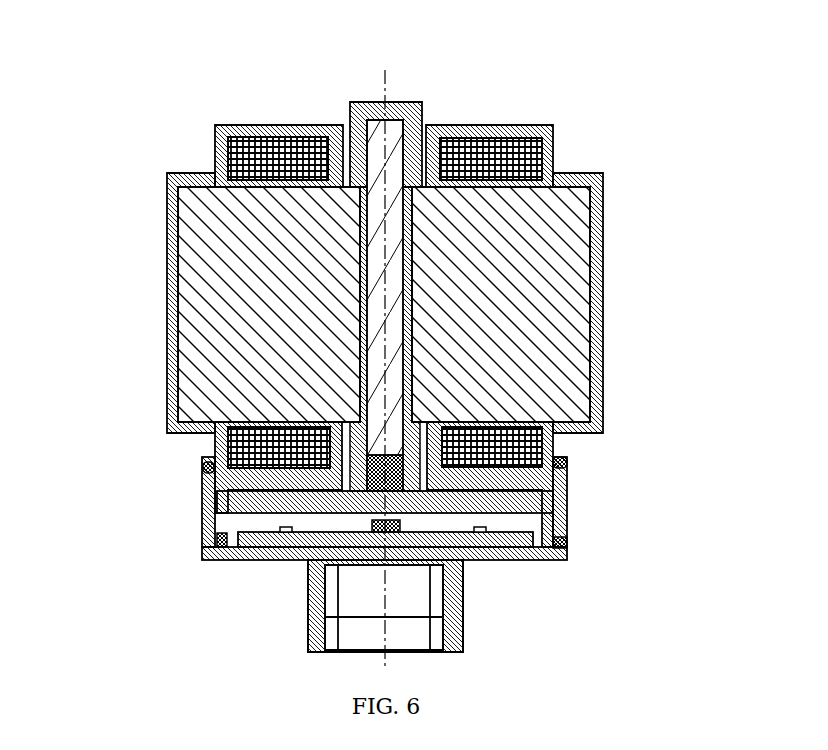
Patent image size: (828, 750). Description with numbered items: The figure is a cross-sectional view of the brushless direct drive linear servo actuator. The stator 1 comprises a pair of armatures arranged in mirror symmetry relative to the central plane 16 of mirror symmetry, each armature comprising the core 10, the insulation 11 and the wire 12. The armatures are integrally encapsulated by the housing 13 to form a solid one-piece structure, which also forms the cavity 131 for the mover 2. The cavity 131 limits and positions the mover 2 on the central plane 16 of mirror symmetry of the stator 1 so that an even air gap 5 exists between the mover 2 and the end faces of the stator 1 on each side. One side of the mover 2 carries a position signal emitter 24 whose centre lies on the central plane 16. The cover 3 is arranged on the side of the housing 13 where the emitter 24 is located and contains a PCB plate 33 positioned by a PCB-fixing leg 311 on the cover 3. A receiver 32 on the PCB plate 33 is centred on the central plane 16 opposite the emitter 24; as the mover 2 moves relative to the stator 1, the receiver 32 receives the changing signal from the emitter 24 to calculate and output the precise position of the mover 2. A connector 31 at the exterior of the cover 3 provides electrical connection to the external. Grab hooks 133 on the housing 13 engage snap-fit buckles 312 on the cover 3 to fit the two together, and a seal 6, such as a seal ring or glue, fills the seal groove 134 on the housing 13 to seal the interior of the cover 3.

The stator 1 is at (185, 168).
The mover 2 is at (393, 285).
The cover 3 is at (202, 540).
The air gap 5 is at (357, 370).
The seal 6 is at (565, 545).
The core 10 is at (523, 300).
The insulation 11 is at (552, 160).
The wire 12 is at (277, 137).
The housing 13 is at (168, 253).
The central plane of mirror symmetry 16 is at (390, 84).
The position signal emitter 24 is at (390, 472).
The connector 31 is at (465, 620).
The receiver 32 is at (420, 592).
The PCB plate 33 is at (223, 560).
The cavity 131 is at (348, 122).
The grab hooks 133 is at (205, 470).
The seal groove 134 is at (570, 530).
The PCB-fixing leg 311 is at (270, 560).
The snap-fit buckles 312 is at (567, 483).